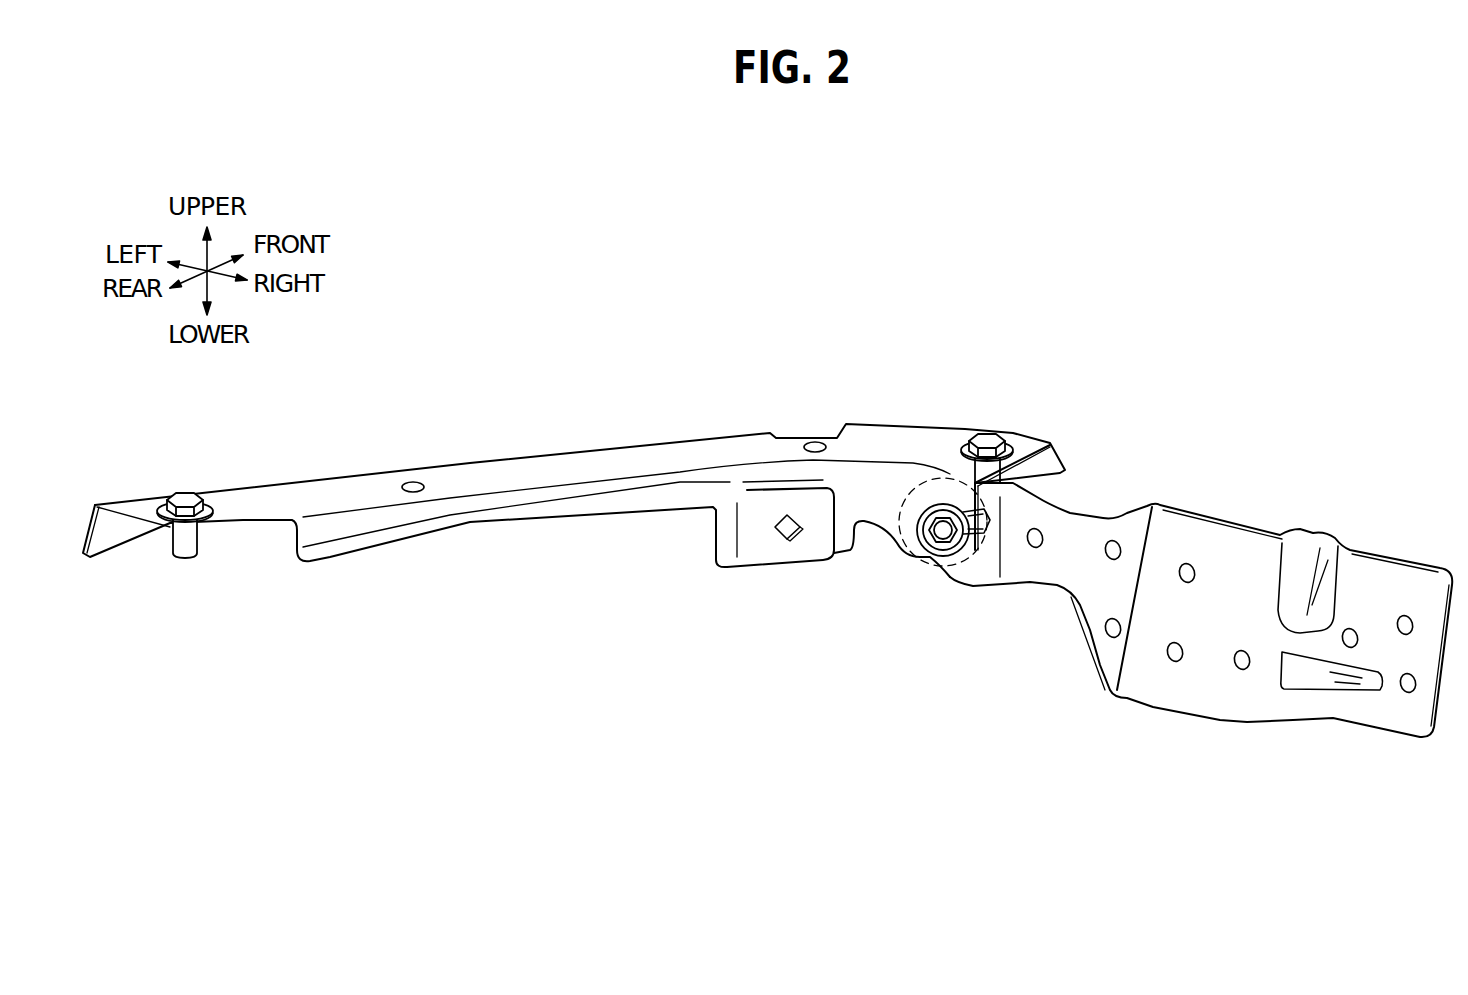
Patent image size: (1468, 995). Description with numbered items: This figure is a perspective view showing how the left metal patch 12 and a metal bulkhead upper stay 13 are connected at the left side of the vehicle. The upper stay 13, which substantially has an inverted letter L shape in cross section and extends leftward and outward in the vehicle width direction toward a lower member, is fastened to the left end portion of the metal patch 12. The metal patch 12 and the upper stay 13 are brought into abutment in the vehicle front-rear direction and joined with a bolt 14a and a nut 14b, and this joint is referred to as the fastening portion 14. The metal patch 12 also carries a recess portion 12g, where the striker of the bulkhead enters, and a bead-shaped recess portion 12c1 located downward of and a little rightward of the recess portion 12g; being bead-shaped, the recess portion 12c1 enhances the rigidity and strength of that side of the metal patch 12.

The metal patch 12 is at (1238, 560).
The recess portion 12g is at (1310, 558).
The recess portion 12c1 is at (1310, 678).
The bulkhead upper stay 13 is at (636, 458).
The fastening portion 14 is at (949, 589).
The bolt 14a is at (938, 548).
The nut 14b is at (980, 579).